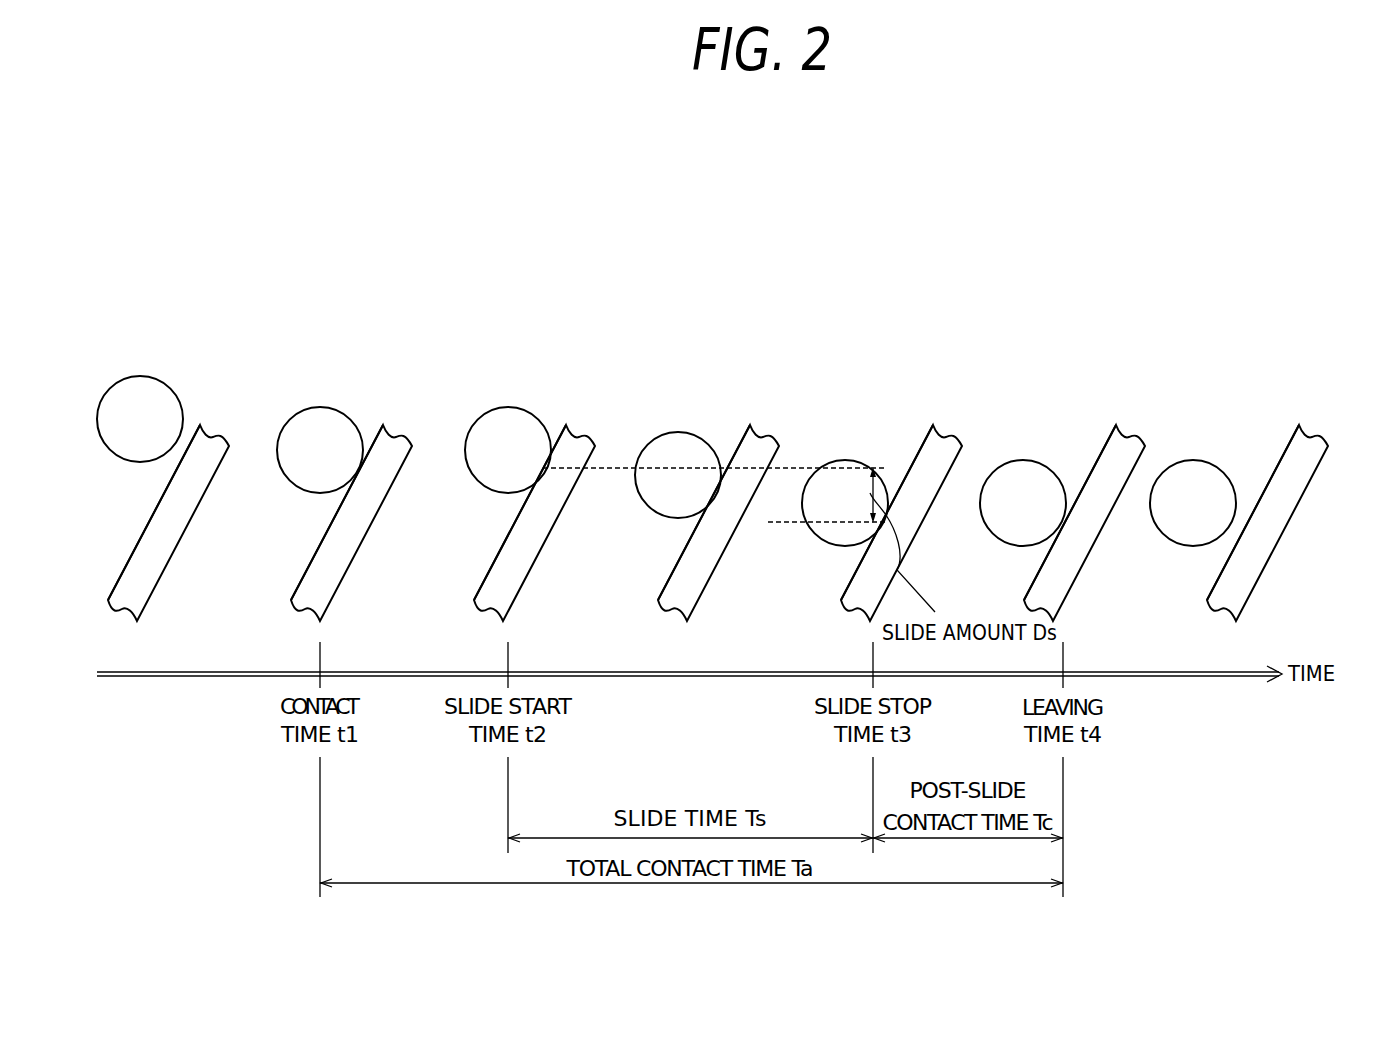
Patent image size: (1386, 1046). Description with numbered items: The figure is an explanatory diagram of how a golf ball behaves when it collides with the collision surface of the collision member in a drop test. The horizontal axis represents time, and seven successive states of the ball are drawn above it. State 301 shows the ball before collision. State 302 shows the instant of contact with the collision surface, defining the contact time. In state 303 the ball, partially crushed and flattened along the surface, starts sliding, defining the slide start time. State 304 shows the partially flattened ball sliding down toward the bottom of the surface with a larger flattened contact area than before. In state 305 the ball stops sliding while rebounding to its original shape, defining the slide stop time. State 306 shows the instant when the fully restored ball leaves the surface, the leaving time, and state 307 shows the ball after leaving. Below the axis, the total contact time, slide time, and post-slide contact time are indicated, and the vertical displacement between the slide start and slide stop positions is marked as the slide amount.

The state before collision 301 is at (252, 318).
The state at instant of contact 302 is at (418, 318).
The slide start state 303 is at (606, 318).
The sliding state 304 is at (783, 318).
The slide stop state 305 is at (965, 318).
The leaving state 306 is at (1147, 318).
The state after leaving 307 is at (1303, 318).